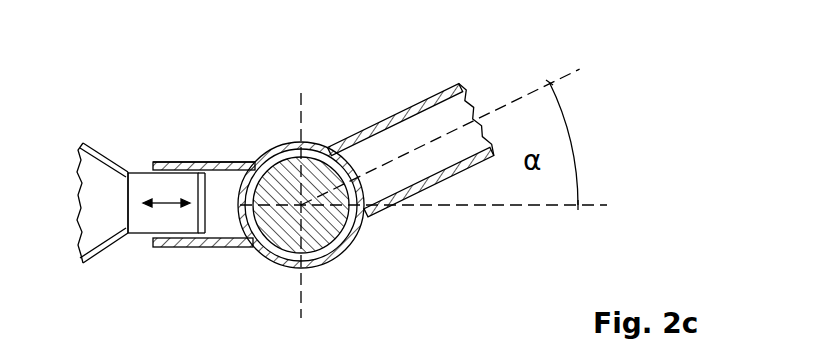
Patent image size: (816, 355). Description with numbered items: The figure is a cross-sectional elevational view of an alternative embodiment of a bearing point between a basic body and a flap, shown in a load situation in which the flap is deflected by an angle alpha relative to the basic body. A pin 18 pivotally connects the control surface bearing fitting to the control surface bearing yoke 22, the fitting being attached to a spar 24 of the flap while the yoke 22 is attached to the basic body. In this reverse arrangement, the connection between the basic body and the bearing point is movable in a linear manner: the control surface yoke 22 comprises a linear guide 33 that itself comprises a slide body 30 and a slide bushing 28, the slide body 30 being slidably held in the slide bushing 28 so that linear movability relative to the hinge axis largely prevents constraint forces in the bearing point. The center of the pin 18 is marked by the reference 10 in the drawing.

The pivot axis / hub 10 is at (297, 200).
The pin 18 is at (323, 183).
The control surface bearing yoke 22 is at (102, 177).
The spar 24 is at (420, 100).
The slide bushing 28 is at (223, 225).
The slide body 30 is at (183, 185).
The linear guide 33 is at (223, 137).